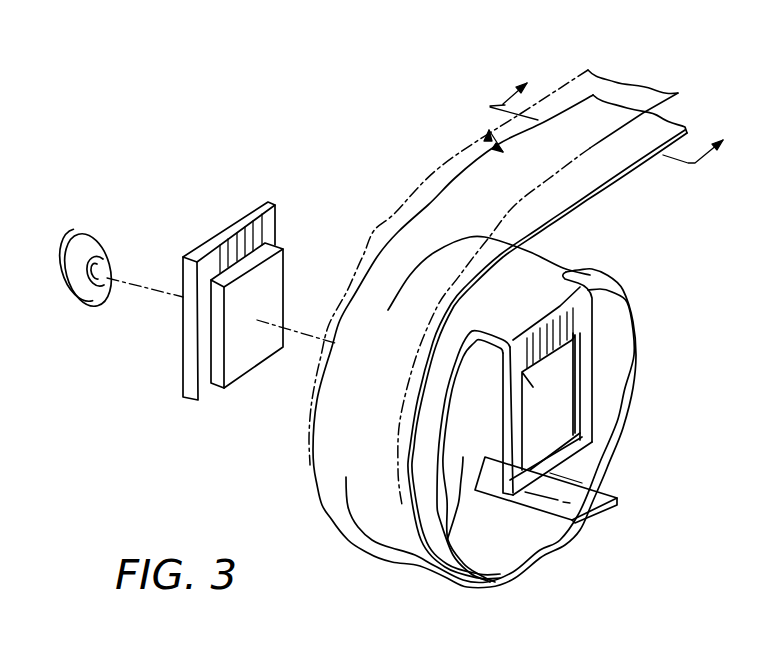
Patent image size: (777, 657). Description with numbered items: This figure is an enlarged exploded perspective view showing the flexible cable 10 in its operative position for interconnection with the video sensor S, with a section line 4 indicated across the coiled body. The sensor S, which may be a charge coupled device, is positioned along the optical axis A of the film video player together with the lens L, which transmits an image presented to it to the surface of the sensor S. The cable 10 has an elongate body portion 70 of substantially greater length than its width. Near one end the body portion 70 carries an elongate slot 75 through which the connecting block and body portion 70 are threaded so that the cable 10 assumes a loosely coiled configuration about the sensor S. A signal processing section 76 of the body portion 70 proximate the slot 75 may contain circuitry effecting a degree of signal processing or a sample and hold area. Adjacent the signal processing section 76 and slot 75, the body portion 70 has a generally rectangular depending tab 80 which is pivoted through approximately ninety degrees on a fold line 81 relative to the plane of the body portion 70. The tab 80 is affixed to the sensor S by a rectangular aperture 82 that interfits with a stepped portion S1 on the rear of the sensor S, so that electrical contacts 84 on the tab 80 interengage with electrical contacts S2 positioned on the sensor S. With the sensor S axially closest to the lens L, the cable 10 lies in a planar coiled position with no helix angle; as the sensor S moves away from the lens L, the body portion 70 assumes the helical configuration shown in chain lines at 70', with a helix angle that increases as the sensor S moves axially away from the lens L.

The flexible cable 10 is at (626, 275).
The elongate body portion 70 is at (563, 337).
The helical configuration of body portion 70' is at (493, 258).
The section line 4- 4 is at (614, 109).
The video sensor S is at (285, 204).
The stepped portion S1 is at (268, 253).
The electrical contacts S2 is at (212, 272).
The lens L is at (63, 312).
The optical axis A is at (122, 283).
The fold line 81 is at (567, 313).
The aperture 82 is at (580, 355).
The electrical contacts 84 is at (570, 323).
The depending tab 80 is at (590, 388).
The elongate slot 75 is at (587, 512).
The signal processing section 76 is at (433, 535).